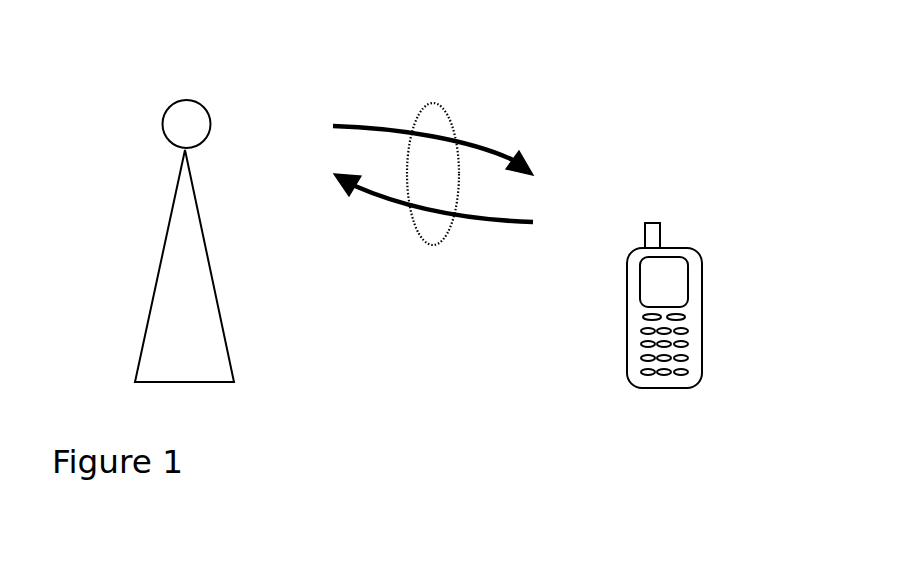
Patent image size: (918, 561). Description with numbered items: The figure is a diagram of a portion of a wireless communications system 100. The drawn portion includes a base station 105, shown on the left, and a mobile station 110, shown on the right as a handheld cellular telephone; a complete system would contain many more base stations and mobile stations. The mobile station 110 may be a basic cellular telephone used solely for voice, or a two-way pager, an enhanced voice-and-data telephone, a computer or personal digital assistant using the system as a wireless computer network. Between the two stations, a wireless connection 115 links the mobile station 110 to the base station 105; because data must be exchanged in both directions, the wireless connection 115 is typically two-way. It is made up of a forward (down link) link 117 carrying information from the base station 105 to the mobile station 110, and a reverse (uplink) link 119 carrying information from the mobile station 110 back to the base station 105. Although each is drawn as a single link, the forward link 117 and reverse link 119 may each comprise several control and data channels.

The wireless communications system 100 is at (647, 120).
The base station 105 is at (155, 288).
The mobile station 110 is at (702, 293).
The wireless connection 115 is at (453, 117).
The forward link 117 is at (373, 125).
The reverse link 119 is at (493, 223).